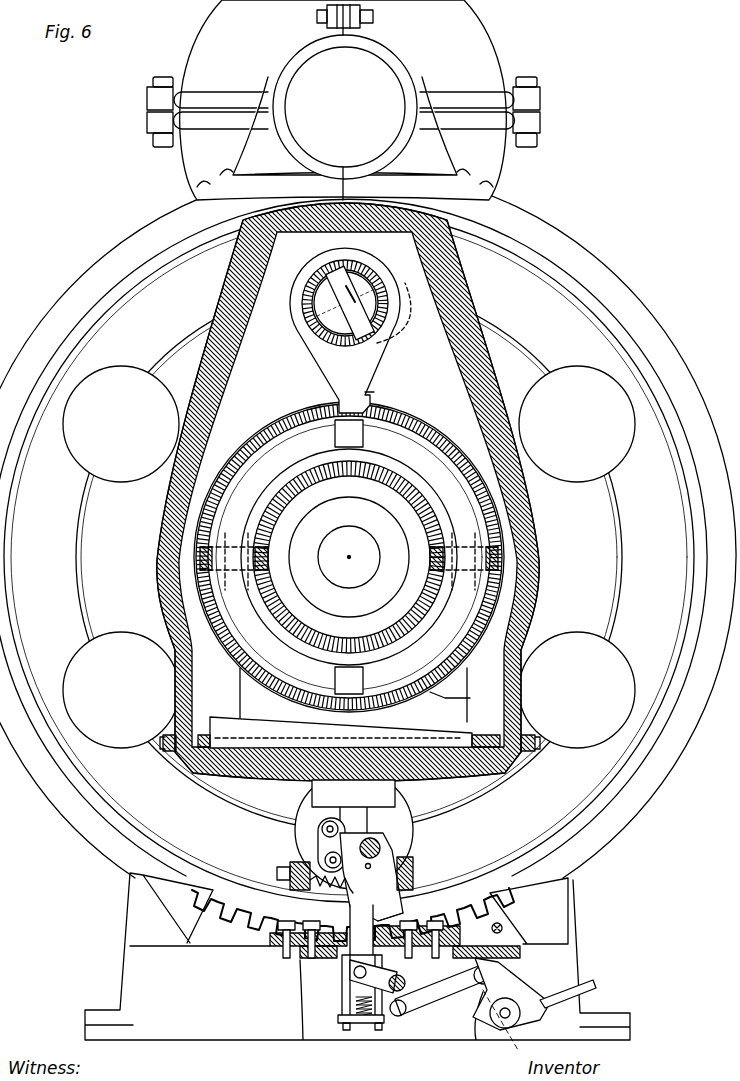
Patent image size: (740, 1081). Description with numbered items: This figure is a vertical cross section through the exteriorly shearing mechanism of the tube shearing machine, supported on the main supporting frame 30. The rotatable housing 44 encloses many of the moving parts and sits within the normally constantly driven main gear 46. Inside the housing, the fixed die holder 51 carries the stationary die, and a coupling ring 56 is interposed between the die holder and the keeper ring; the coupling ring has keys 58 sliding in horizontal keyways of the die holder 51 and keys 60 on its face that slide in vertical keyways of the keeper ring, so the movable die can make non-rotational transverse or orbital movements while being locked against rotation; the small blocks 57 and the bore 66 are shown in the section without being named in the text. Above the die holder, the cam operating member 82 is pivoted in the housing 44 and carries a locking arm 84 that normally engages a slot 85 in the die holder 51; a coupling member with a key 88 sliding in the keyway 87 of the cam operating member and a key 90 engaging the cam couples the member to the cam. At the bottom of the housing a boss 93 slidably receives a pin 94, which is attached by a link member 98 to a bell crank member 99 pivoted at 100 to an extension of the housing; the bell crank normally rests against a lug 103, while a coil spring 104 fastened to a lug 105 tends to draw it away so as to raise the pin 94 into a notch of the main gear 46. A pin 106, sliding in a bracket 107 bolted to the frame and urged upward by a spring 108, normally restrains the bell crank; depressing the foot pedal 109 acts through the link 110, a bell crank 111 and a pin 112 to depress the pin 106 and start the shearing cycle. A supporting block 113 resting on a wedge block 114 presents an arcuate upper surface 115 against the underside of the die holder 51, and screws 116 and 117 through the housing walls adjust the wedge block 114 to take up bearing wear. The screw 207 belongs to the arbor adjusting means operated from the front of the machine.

The main supporting frame 30 is at (580, 895).
The housing 44 is at (539, 594).
The main gear 46 is at (494, 916).
The die holder 51 is at (430, 434).
The coupling ring 56 is at (448, 620).
The keys 57 is at (208, 556).
The keys 58 is at (236, 585).
The keys 60 is at (345, 433).
The bore 66 is at (318, 303).
The cam operating member 82 is at (394, 298).
The locking arm 84 is at (372, 392).
The slot 85 is at (322, 410).
The keyway 87 is at (375, 288).
The key 88 is at (362, 281).
The key 90 is at (330, 292).
The boss 93 is at (380, 797).
The pin 94 is at (355, 821).
The link member 98 is at (322, 840).
The bell crank member 99 is at (385, 860).
The pivot 100 is at (383, 872).
The lug 103 is at (413, 876).
The coil spring 104 is at (398, 915).
The lug 105 is at (290, 868).
The pin 106 is at (350, 970).
The bracket 107 is at (305, 960).
The spring 108 is at (362, 1031).
The foot pedal 109 is at (580, 985).
The link 110 is at (453, 1002).
The bell crank 111 is at (405, 976).
The pin 112 is at (350, 995).
The supporting block 113 is at (262, 690).
The wedge block 114 is at (220, 718).
The arcuate upper surface 115 is at (469, 694).
The screw 116 is at (168, 751).
The screw 117 is at (535, 751).
The screw 207 is at (505, 927).